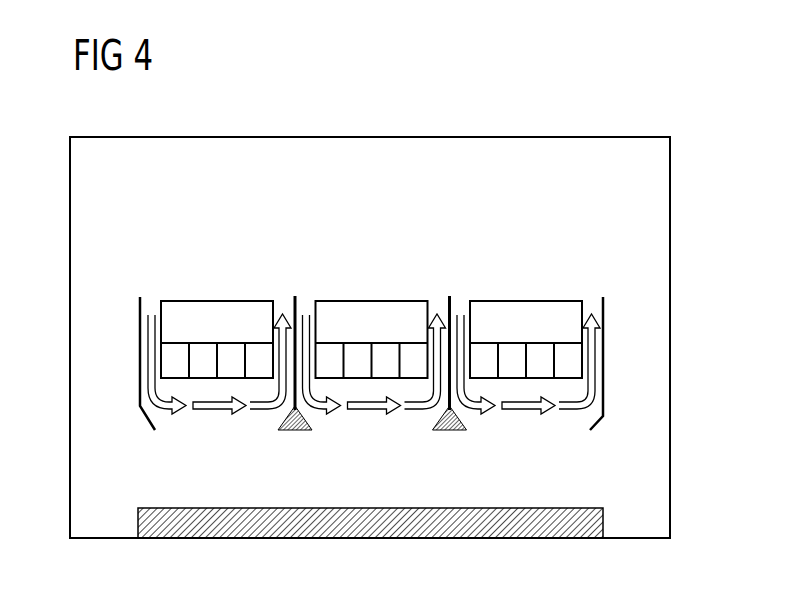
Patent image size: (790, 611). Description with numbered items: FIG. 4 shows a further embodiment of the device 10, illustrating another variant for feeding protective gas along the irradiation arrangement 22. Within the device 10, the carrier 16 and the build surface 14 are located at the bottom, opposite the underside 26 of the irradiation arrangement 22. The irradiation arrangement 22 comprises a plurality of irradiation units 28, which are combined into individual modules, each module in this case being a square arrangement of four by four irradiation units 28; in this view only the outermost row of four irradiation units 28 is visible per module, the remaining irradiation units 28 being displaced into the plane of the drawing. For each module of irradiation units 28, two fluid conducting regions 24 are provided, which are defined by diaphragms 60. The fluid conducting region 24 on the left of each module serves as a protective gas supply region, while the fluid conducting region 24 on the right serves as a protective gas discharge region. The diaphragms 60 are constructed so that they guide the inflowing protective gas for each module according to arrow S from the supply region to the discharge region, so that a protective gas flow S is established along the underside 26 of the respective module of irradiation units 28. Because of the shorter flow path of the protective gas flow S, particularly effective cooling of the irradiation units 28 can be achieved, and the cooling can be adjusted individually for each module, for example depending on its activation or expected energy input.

The device 10 is at (604, 116).
The build surface 14 is at (374, 485).
The carrier 16 is at (143, 507).
The irradiation arrangement 22 is at (383, 290).
The fluid conducting regions 24 is at (374, 409).
The underside 26 is at (247, 415).
The irradiation units 28 is at (262, 355).
The diaphragms 60 is at (133, 343).
The protective gas flow S is at (265, 425).